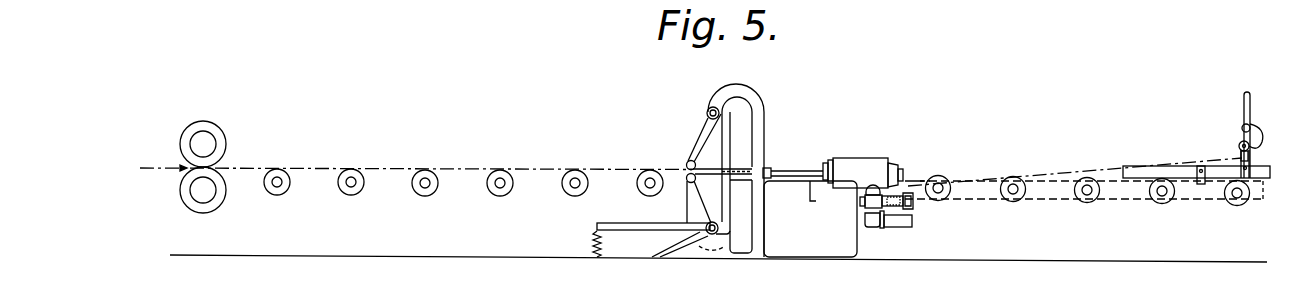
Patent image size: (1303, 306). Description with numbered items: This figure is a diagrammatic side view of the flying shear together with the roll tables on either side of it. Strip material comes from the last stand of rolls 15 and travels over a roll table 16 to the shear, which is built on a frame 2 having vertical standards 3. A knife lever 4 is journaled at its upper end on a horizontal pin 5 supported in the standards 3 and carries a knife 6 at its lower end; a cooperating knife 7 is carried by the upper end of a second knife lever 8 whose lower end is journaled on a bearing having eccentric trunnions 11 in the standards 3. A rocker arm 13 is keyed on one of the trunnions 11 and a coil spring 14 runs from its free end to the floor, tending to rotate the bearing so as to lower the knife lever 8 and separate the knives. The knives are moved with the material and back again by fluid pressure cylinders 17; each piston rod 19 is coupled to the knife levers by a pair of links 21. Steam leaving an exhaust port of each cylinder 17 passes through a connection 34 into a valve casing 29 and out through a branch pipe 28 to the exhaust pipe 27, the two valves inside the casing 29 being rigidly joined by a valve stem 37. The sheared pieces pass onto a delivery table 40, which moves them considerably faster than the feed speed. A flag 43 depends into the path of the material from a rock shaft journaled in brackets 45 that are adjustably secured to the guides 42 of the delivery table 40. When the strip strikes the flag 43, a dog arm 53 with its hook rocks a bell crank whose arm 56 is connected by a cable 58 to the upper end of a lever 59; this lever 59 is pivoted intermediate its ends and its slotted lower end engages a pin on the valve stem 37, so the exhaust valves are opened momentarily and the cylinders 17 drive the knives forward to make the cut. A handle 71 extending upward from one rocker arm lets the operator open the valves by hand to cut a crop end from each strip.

The frame 2 is at (810, 219).
The vertical standards 3 is at (758, 126).
The knife lever 4 is at (701, 136).
The horizontal pin 5 is at (707, 113).
The knife 6 is at (687, 162).
The cooperating knife 7 is at (687, 181).
The knife lever 8 is at (690, 203).
The eccentric trunnions 11 is at (716, 233).
The rocker arm 13 is at (636, 231).
The coil spring 14 is at (594, 242).
The last stand of rolls 15 is at (225, 133).
The roll table 16 is at (288, 191).
The fluid pressure cylinders 17 is at (877, 165).
The piston rod 19 is at (797, 168).
The links 21 is at (710, 169).
The exhaust pipe 27 is at (902, 227).
The branch pipes 28 is at (873, 228).
The valve casing 29 is at (868, 203).
The connection 34 is at (866, 189).
The valve stem 37 is at (913, 208).
The delivery table 40 is at (950, 196).
The guides 42 is at (1142, 165).
The flag 43 is at (1250, 200).
The brackets 45 is at (1243, 163).
The arm of the dog 53 is at (1257, 130).
The arm of the bell crank lever 56 is at (1241, 152).
The cable 58 is at (1062, 164).
The lever 59 is at (912, 184).
The handle 71 is at (1249, 122).